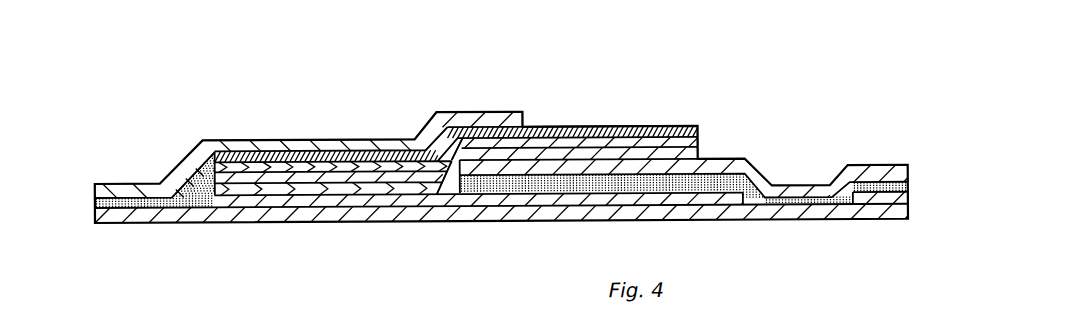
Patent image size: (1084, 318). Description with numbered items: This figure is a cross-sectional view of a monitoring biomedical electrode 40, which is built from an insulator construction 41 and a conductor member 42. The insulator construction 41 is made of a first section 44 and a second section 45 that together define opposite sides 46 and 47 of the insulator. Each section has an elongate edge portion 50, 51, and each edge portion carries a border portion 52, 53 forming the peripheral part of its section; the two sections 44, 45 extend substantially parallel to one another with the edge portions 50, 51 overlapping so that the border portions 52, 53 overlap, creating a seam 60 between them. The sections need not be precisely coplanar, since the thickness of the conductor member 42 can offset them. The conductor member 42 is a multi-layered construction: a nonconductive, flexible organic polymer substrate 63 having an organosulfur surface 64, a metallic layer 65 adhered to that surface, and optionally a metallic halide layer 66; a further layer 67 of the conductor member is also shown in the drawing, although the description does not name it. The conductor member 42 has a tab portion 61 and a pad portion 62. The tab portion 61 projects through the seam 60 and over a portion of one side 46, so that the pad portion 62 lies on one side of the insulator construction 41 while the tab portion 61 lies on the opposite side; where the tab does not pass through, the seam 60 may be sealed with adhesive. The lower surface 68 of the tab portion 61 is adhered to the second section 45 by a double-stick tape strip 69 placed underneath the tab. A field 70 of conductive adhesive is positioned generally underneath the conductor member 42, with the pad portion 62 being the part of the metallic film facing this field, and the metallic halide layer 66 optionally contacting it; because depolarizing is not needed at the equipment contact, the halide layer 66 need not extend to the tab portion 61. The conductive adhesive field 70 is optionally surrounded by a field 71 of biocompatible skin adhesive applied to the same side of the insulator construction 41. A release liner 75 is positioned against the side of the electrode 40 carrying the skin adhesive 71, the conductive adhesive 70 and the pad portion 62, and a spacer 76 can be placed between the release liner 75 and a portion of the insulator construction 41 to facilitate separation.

The electrode 40 is at (732, 92).
The insulator construction 41 is at (173, 147).
The conductor member 42 is at (720, 133).
The first section 44 is at (408, 142).
The second section 45 is at (723, 164).
The side 46 is at (342, 141).
The side 47 is at (377, 158).
The edge portion 50 is at (527, 125).
The edge portion 51 is at (441, 178).
The border portion 52 is at (507, 131).
The border portion 53 is at (558, 188).
The seam 60 is at (487, 114).
The tab portion 61 is at (620, 124).
The pad portion 62 is at (228, 140).
The flexible organic polymer substrate 63 is at (262, 179).
The organosulfur surface 64 is at (310, 168).
The metallic layer 65 is at (253, 190).
The metallic halide layer 66 is at (327, 190).
The layer 67 is at (660, 148).
The lower surface 68 is at (690, 152).
The double-stick tape strip 69 is at (456, 143).
The field of conductive adhesive 70 is at (409, 203).
The field of biocompatible skin adhesive 71 is at (191, 200).
The release liner 75 is at (852, 224).
The spacer 76 is at (908, 195).